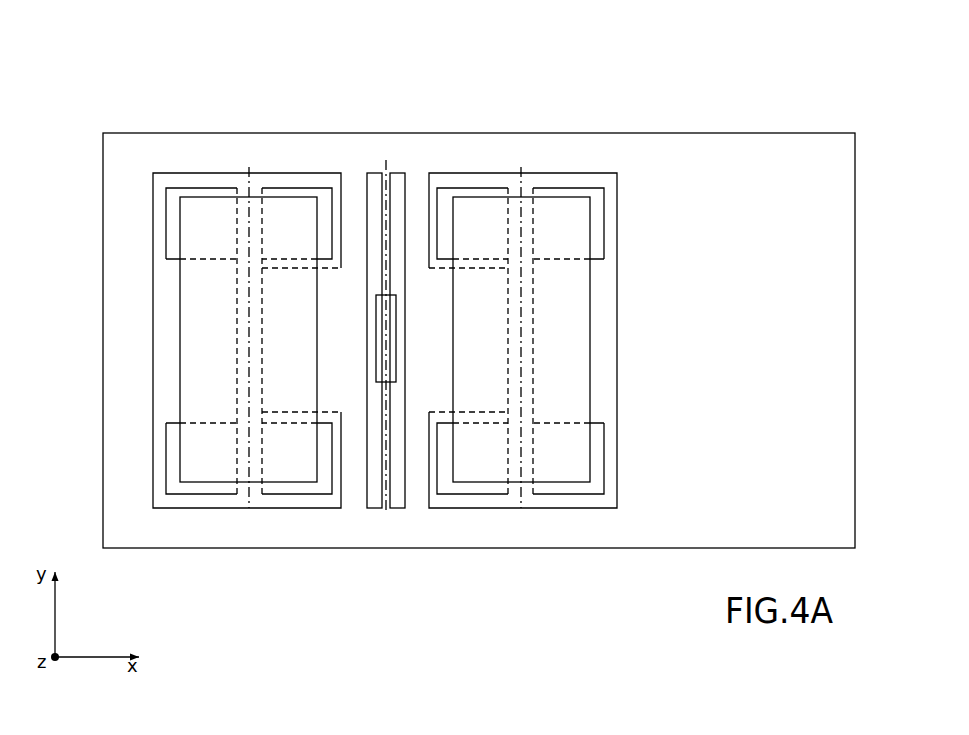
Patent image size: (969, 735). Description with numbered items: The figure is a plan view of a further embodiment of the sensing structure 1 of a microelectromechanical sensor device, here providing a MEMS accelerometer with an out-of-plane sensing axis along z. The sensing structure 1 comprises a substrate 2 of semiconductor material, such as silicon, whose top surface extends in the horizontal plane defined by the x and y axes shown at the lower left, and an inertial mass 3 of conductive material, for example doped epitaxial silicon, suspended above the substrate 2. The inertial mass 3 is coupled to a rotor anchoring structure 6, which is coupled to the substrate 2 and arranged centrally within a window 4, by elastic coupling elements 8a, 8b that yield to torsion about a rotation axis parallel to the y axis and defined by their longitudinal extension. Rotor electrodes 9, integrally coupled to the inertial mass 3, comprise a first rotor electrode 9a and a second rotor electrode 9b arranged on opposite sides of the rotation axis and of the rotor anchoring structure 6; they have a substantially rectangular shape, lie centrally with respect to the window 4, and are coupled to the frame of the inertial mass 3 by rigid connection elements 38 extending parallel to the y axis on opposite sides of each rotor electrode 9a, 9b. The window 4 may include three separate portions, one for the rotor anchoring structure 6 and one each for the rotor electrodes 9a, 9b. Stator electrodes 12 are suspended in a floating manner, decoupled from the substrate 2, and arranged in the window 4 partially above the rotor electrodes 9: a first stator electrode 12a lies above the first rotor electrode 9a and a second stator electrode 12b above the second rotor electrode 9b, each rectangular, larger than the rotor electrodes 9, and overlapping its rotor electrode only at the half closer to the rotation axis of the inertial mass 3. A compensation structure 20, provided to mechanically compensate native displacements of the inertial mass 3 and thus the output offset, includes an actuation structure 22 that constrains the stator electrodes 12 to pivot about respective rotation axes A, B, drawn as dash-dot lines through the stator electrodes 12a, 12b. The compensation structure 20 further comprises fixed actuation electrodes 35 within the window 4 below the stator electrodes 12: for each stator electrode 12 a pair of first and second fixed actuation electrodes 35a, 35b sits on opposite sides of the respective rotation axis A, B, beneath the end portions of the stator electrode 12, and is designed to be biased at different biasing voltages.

The sensing structure 1 is at (842, 116).
The substrate 2 is at (611, 341).
The inertial mass 3 is at (838, 263).
The window 4 is at (373, 181).
The rotor anchoring structure 6 is at (376, 377).
The elastic coupling element 8a is at (393, 193).
The elastic coupling element 8b is at (390, 483).
The rotor electrodes 9 is at (329, 282).
The first rotor electrode 9a is at (327, 405).
The second rotor electrode 9b is at (432, 385).
The stator electrodes 12 is at (177, 334).
The first stator electrode 12a is at (253, 197).
The second stator electrode 12b is at (527, 203).
The compensation structure 20 is at (220, 176).
The actuation structure 22 is at (192, 174).
The fixed actuation electrodes 35 is at (152, 220).
The first fixed actuation electrode 35a is at (172, 193).
The second fixed actuation electrode 35b is at (273, 190).
The rigid connection elements 38 is at (352, 187).
The rotation axis A is at (247, 505).
The rotation axis B is at (521, 502).